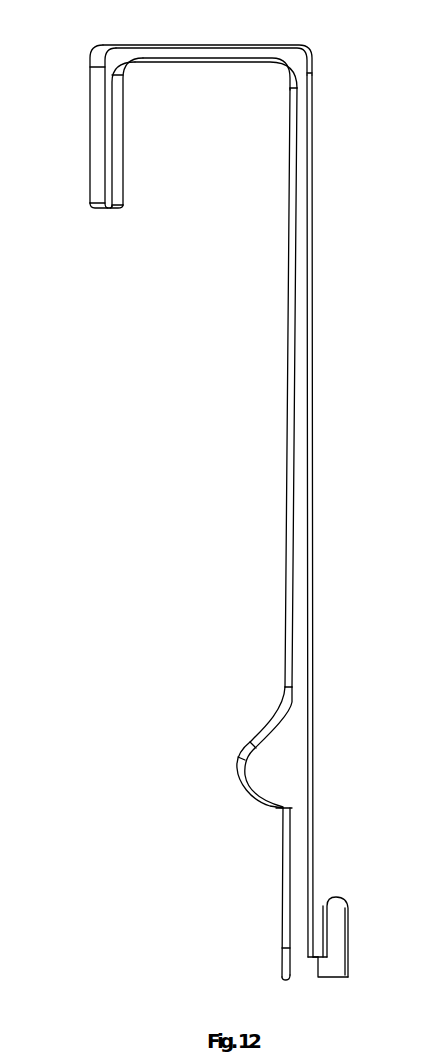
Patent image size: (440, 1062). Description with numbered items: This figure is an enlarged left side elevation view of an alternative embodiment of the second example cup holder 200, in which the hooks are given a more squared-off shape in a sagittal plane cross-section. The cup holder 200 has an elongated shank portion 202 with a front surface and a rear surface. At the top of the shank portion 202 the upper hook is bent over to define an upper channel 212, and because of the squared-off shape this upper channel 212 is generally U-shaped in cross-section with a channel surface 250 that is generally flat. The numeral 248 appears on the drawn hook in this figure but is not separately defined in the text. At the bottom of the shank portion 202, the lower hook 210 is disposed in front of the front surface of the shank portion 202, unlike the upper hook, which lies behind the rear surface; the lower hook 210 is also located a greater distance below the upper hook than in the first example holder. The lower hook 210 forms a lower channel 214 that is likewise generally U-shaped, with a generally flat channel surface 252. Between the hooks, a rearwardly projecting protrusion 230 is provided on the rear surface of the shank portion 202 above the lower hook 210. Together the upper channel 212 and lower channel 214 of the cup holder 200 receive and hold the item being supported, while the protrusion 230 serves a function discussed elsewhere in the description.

The cup holder 200 is at (207, 523).
The shank portion 202 is at (330, 393).
The upper channel 212 is at (208, 207).
The first leg of upper hook 248 is at (100, 57).
The channel surface 250 is at (168, 58).
The rearwardly projecting protrusion 230 is at (240, 753).
The lower hook 210 is at (282, 979).
The lower channel 214 is at (318, 897).
The channel surface 252 is at (318, 980).